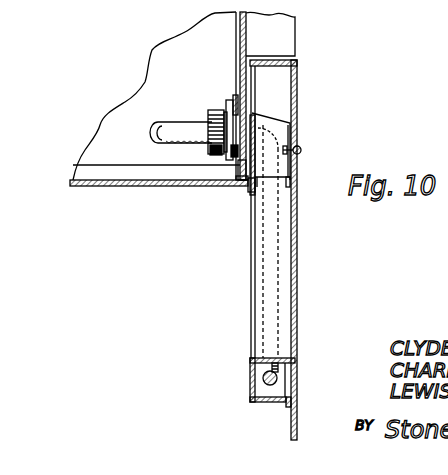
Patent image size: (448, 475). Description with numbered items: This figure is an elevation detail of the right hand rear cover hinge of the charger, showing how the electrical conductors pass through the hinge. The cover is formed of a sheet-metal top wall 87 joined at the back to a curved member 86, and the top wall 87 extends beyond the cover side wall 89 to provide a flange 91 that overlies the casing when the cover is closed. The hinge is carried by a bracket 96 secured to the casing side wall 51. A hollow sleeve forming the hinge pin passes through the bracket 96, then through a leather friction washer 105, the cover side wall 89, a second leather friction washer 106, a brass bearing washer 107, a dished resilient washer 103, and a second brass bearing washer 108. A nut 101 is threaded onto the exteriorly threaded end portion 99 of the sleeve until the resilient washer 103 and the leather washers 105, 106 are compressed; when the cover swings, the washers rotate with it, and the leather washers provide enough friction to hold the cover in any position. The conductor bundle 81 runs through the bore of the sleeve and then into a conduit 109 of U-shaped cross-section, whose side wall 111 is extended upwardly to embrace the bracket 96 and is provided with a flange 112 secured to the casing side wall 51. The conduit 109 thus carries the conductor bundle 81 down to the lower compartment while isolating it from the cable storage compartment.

The side wall 51 is at (298, 75).
The conductor bundle 81 is at (275, 370).
The curved member 86 is at (100, 186).
The top wall 87 is at (147, 83).
The side wall 89 is at (247, 33).
The flange 91 is at (290, 48).
The bracket 96 is at (288, 133).
The exteriorly threaded end portion 99 is at (208, 116).
The nut 101 is at (217, 153).
The dished resilient washer 103 is at (233, 110).
The leather friction washer 105 is at (246, 186).
The second leather friction washer 106 is at (242, 180).
The brass bearing washer 107 is at (237, 170).
The second brass bearing washer 108 is at (232, 105).
The conduit 109 is at (270, 277).
The side wall 111 is at (245, 335).
The flange 112 is at (282, 340).